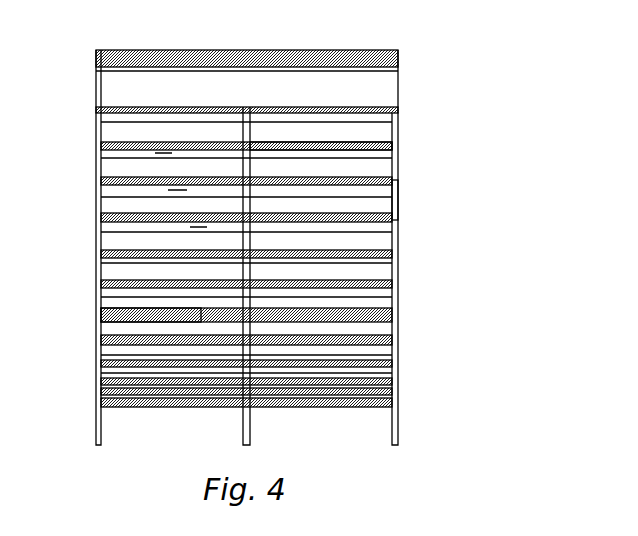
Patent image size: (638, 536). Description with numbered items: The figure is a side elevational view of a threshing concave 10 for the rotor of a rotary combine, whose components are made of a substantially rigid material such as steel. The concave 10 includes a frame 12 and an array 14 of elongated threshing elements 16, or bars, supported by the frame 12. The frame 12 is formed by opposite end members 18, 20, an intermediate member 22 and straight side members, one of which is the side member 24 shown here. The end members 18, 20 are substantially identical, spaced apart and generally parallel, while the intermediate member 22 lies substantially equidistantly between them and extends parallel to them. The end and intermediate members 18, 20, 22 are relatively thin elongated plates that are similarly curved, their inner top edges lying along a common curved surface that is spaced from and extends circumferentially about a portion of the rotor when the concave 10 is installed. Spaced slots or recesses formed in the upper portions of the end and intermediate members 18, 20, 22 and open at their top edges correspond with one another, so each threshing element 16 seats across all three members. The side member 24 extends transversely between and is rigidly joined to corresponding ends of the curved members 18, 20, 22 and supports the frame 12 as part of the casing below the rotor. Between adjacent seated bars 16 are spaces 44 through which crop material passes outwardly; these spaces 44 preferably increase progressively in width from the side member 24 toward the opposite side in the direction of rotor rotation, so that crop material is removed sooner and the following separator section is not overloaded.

The threshing concave 10 is at (416, 101).
The frame 12 is at (398, 275).
The array of elongated threshing elements 14 is at (130, 307).
The threshing elements 16 is at (123, 208).
The end member 18 is at (98, 232).
The end member 20 is at (393, 200).
The intermediate member 22 is at (393, 157).
The side member 24 is at (272, 50).
The spaces between the bars 44 is at (197, 225).